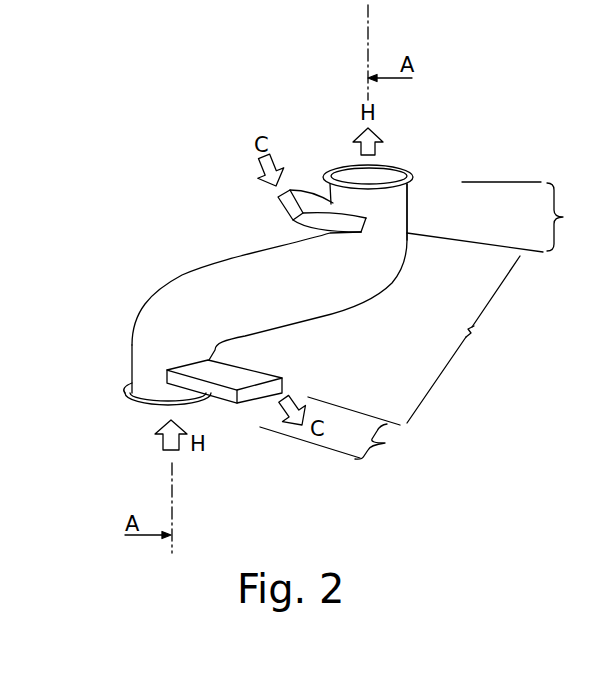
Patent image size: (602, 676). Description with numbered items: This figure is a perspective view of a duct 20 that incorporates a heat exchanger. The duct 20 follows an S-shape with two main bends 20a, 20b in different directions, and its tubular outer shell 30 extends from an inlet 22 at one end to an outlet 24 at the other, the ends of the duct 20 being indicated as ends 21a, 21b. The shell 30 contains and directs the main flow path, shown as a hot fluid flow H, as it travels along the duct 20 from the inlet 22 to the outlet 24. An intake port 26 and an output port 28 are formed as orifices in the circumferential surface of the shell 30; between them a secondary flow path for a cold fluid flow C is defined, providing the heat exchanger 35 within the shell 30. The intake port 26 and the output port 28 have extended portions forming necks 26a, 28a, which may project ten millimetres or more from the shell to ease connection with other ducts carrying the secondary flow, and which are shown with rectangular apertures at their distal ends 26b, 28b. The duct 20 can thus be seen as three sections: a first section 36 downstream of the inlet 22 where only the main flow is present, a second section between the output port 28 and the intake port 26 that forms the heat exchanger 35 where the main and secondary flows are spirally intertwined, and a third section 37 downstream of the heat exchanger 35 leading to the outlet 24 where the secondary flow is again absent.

The duct 20 is at (270, 288).
The first bend 20a is at (134, 364).
The second bend 20b is at (402, 197).
The first end of the duct 21a is at (128, 394).
The second end of the duct 21b is at (411, 173).
The inlet 22 is at (143, 403).
The outlet 24 is at (383, 166).
The intake port 26 is at (331, 181).
The neck of the intake port 26a is at (321, 206).
The distal end of the intake port neck 26b is at (278, 198).
The output port 28 is at (261, 418).
The neck of the output port 28a is at (258, 374).
The distal end of the output port neck 28b is at (237, 405).
The outer shell 30 is at (330, 288).
The heat exchanger 35 is at (463, 339).
The first section 36 is at (337, 429).
The third section 37 is at (499, 217).